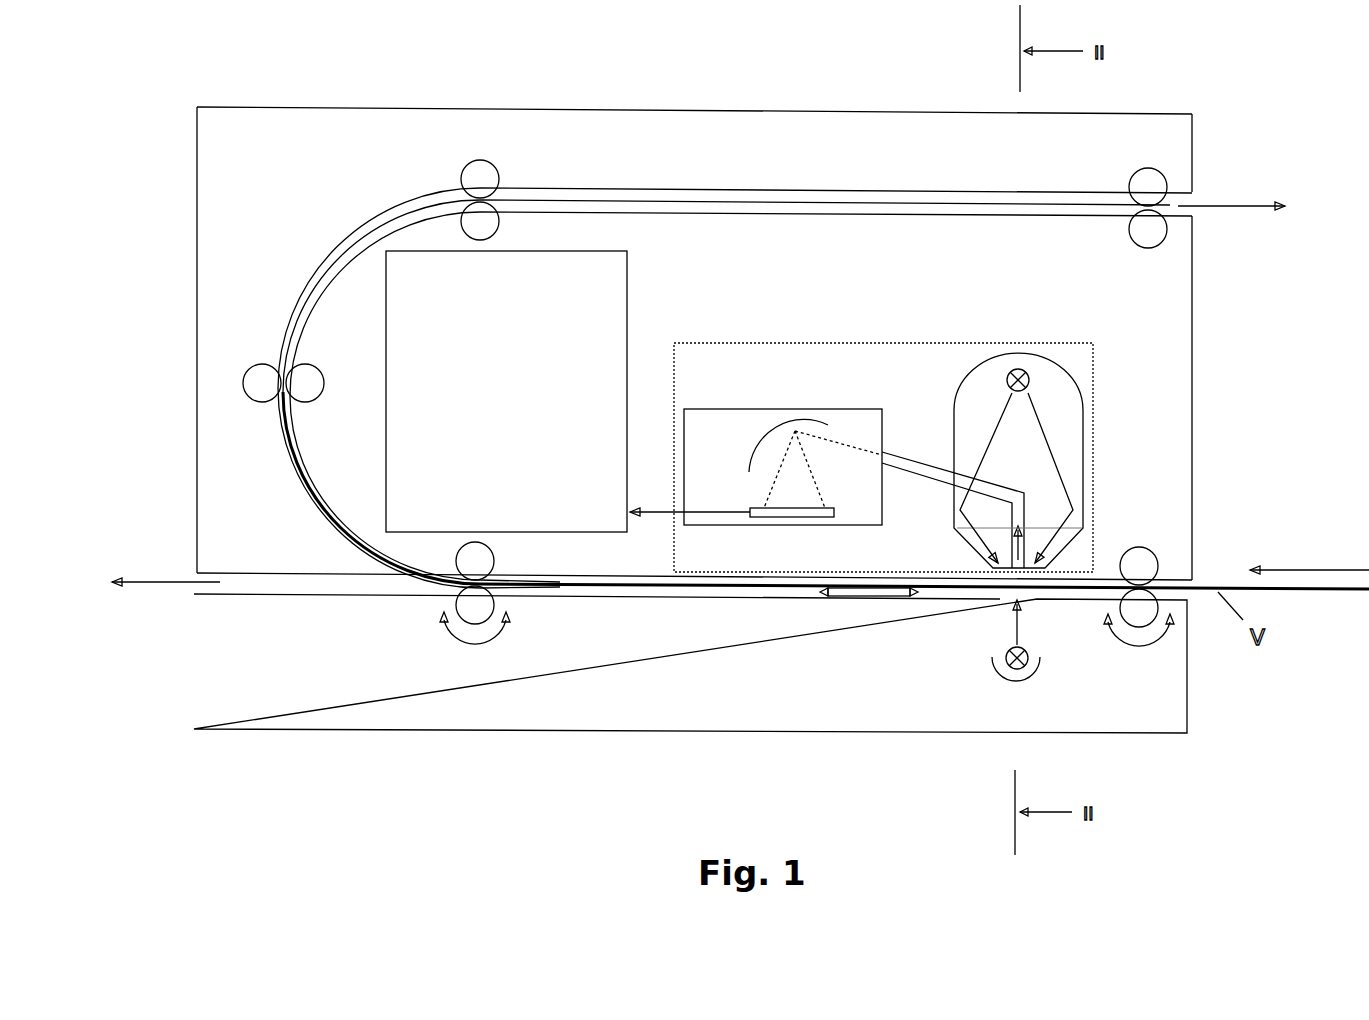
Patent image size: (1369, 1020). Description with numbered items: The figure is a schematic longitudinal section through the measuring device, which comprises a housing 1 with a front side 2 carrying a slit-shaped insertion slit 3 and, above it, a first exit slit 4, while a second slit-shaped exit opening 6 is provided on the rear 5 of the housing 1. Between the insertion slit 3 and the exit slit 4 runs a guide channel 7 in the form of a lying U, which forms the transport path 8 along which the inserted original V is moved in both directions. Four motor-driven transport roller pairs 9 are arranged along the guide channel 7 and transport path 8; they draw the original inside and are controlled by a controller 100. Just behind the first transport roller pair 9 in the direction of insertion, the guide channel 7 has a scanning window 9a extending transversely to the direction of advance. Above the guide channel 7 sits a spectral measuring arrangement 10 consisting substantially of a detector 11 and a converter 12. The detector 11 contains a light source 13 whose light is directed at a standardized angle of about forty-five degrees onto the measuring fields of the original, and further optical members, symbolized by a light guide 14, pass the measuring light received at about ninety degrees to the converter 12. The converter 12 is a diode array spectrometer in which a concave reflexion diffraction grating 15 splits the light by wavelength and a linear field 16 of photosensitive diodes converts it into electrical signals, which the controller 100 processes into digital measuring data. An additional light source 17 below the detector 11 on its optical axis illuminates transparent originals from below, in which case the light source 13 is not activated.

The housing 1 is at (223, 154).
The front side 2 is at (1195, 428).
The insertion slit 3 is at (1190, 582).
The exit slit 4 is at (1193, 198).
The rear 5 is at (197, 415).
The second exit opening 6 is at (197, 580).
The guide channel 7 is at (978, 192).
The transport path 8 is at (338, 254).
The transport roller pairs 9 is at (490, 180).
The scanning window 9a is at (1008, 597).
The spectral measuring arrangement 10 is at (852, 367).
The detector 11 is at (1062, 400).
The converter 12 is at (743, 422).
The light source 13 is at (1020, 375).
The light guide 14 is at (903, 460).
The concave reflexion diffraction grating 15 is at (757, 452).
The linear field of photosensitive diodes 16 is at (788, 512).
The additional light source 17 is at (1005, 665).
The controller 100 is at (550, 330).